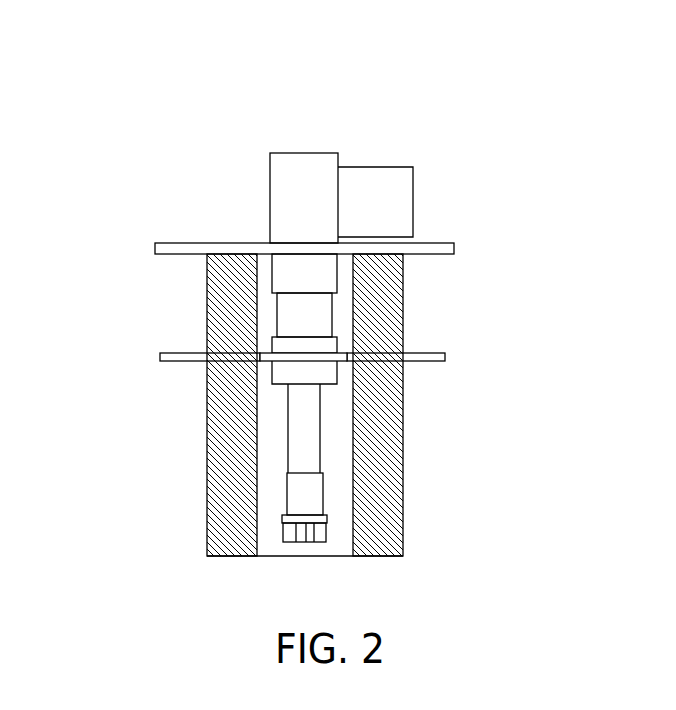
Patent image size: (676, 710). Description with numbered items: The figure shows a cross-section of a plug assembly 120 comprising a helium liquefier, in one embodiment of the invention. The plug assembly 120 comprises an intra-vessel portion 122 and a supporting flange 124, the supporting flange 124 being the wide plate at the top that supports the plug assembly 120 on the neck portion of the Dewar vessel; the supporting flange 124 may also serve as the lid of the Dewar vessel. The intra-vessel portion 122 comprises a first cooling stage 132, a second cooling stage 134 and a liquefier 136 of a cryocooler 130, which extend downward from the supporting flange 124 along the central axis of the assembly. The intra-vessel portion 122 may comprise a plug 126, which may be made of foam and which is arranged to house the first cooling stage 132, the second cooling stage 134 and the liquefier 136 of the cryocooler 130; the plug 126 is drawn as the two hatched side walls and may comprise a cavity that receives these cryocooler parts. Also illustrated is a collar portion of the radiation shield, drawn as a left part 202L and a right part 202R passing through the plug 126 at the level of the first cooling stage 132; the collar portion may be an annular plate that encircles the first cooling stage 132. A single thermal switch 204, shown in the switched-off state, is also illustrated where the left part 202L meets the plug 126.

The plug assembly 120 is at (88, 90).
The intra-vessel portion 122 is at (207, 274).
The supporting flange 124 is at (253, 243).
The plug 126 is at (403, 380).
The cryocooler 130 is at (270, 200).
The first cooling stage 132 is at (332, 307).
The second cooling stage 134 is at (320, 425).
The liquefier 136 is at (326, 530).
The left part of collar portion 202L is at (160, 361).
The right part of collar portion 202R is at (445, 357).
The thermal switch 204 is at (256, 352).